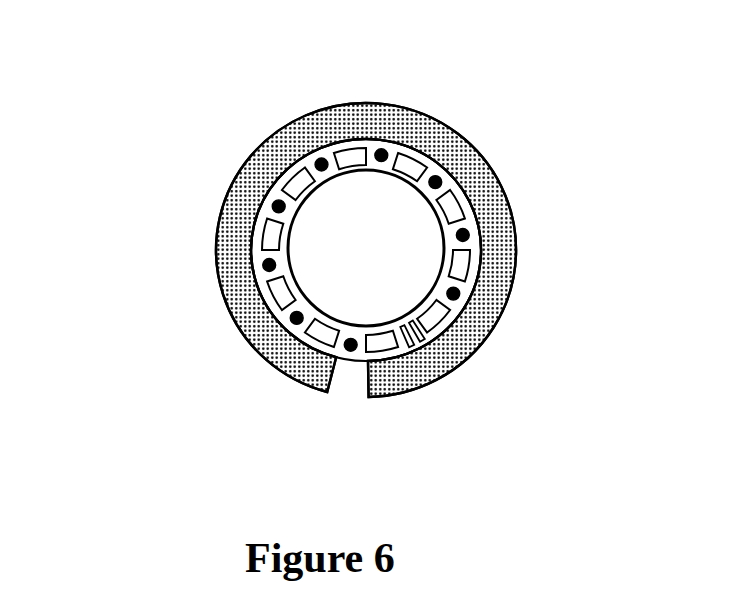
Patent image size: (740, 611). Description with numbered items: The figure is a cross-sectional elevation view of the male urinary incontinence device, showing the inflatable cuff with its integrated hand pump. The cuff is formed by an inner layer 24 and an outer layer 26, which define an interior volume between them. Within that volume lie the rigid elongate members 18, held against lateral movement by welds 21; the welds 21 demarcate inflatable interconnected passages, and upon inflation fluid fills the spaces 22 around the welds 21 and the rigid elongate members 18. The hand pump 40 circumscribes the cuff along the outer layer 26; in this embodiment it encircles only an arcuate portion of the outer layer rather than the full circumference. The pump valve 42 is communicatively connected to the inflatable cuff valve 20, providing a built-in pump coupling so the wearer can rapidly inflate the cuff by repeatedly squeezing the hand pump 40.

The rigid elongate members 18 is at (452, 200).
The inflatable cuff valve 20 is at (453, 328).
The welds 21 is at (463, 230).
The spaces 22 is at (460, 291).
The inner layer 24 is at (253, 277).
The outer layer 26 is at (330, 145).
The hand pump 40 is at (225, 194).
The pump valve 42 is at (421, 342).